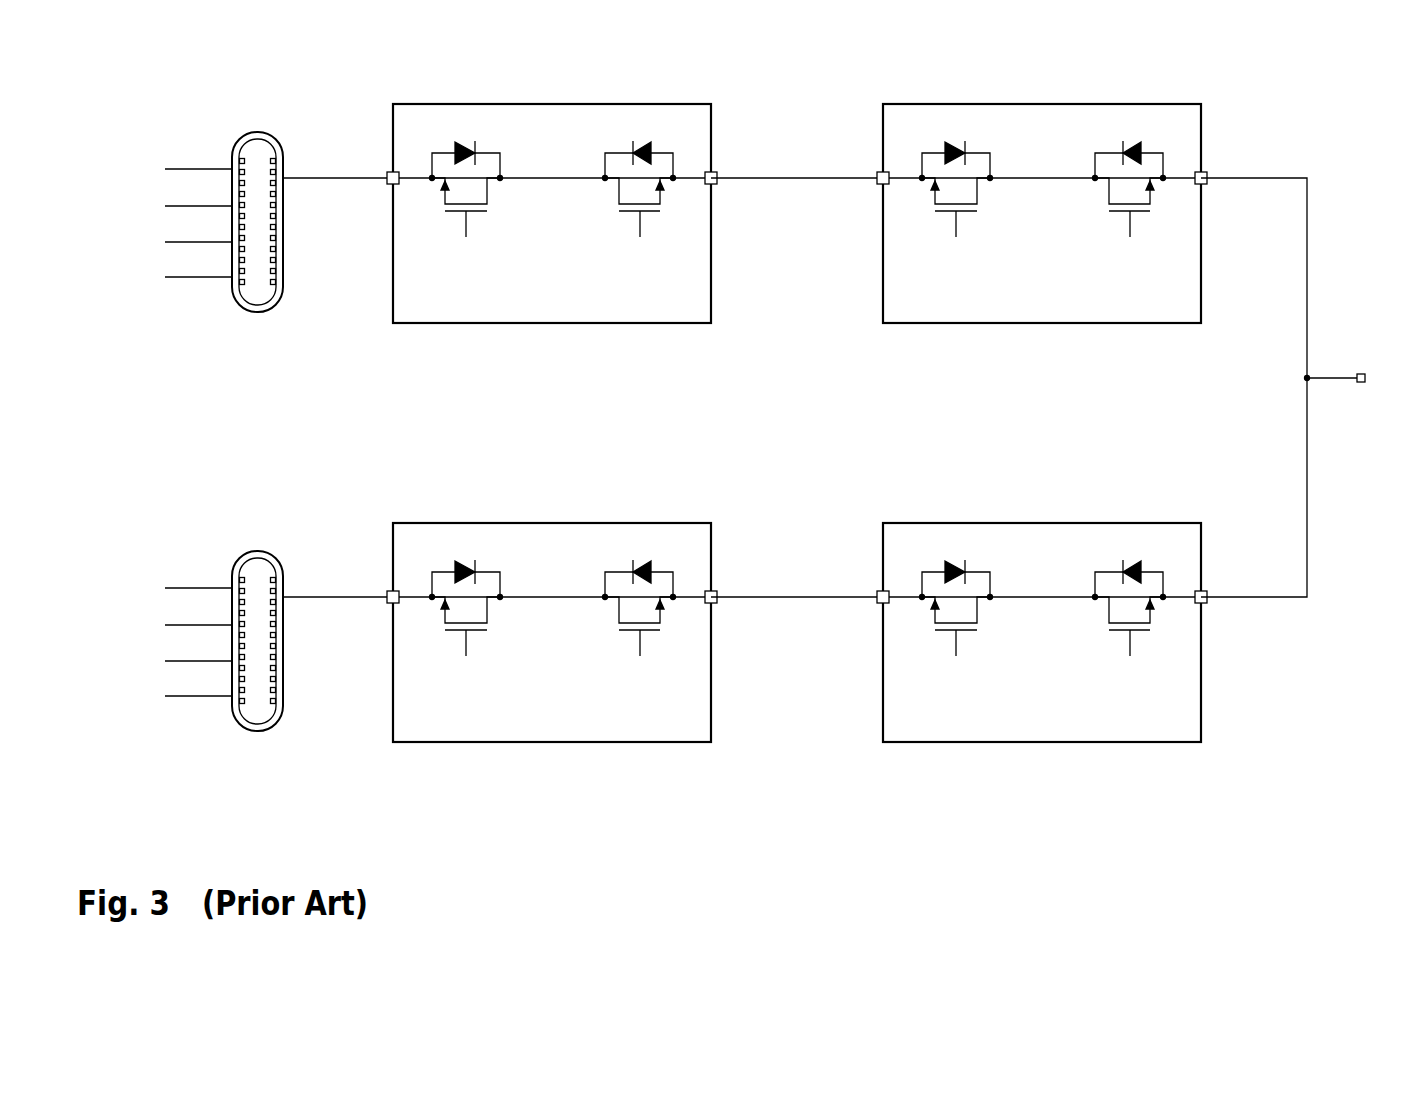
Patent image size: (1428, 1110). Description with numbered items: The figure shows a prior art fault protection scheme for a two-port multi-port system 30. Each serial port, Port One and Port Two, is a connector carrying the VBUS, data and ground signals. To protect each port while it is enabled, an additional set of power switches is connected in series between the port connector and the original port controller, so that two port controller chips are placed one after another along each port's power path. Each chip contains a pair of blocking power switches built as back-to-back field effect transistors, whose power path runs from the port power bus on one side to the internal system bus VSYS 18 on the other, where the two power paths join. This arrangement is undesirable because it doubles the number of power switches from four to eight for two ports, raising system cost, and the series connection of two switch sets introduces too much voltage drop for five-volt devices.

The prior art multi-port power path system 30 is at (1222, 38).
The internal system bus VSYS 18 is at (1307, 212).